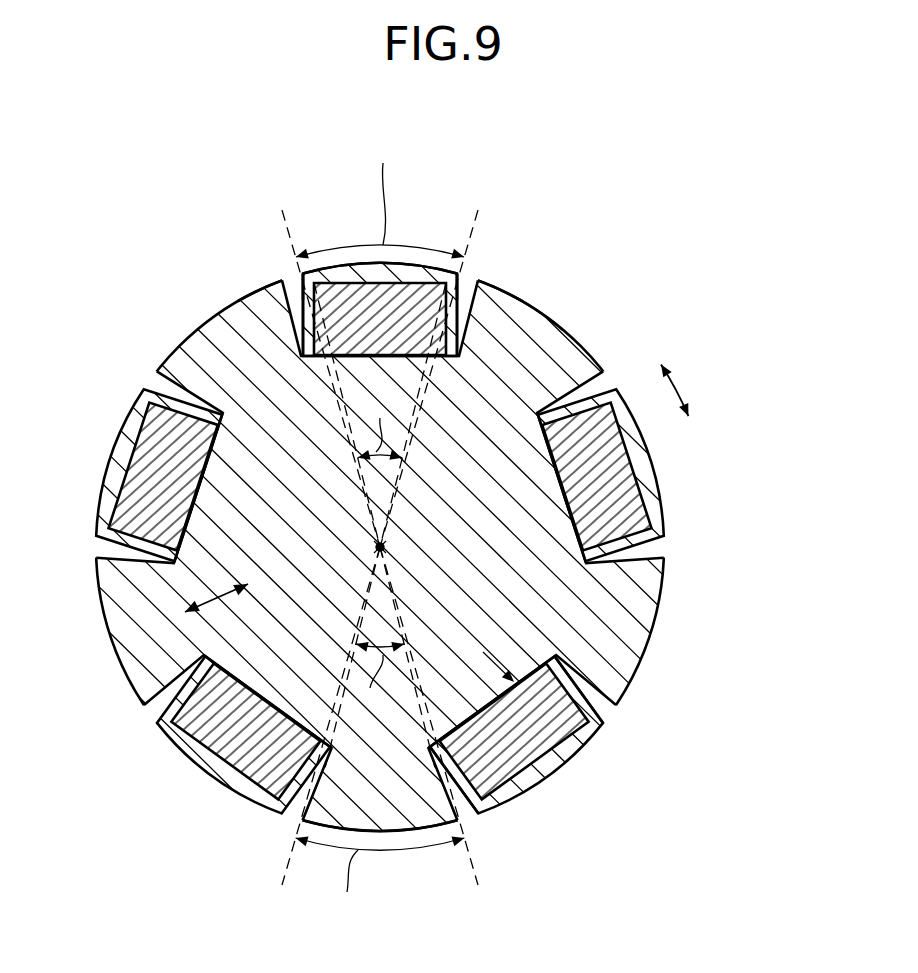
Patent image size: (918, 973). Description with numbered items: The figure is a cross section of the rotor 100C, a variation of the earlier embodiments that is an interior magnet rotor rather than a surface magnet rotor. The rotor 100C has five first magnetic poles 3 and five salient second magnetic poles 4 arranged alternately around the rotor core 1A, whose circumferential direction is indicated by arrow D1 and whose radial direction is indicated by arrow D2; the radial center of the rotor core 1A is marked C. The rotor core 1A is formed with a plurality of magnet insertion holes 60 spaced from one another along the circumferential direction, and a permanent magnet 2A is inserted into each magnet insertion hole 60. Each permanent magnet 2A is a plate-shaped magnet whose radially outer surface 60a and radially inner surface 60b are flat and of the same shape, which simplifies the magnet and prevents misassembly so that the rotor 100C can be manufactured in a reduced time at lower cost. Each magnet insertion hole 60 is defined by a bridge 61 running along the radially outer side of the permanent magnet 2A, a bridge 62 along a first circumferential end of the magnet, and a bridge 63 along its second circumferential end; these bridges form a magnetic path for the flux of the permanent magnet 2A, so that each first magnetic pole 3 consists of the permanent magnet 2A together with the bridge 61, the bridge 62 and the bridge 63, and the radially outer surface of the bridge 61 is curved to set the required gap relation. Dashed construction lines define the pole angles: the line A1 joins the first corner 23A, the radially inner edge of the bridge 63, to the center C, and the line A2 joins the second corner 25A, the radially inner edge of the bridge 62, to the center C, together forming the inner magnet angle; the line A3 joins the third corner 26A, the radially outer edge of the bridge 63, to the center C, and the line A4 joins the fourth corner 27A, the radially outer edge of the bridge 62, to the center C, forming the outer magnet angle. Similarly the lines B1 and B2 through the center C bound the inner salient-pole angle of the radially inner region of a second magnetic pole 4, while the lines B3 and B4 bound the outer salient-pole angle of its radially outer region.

The rotor 100C is at (737, 125).
The rotor core 1A is at (510, 595).
The permanent magnet 2A is at (548, 745).
The first magnetic pole 3 is at (420, 233).
The second magnetic pole 4 is at (575, 314).
The first corner 23A is at (285, 366).
The second corner 25A is at (463, 357).
The third corner 26A is at (313, 274).
The fourth corner 27A is at (448, 272).
The magnet insertion hole 60 is at (455, 730).
The radially outer surface 60a is at (523, 780).
The radially inner surface 60b is at (514, 680).
The bridge 61 is at (372, 278).
The bridge 62 is at (455, 312).
The bridge 63 is at (304, 325).
The line A1 is at (337, 440).
The line A2 is at (427, 440).
The line A3 is at (360, 489).
The line A4 is at (400, 489).
The line B1 is at (420, 678).
The line B2 is at (343, 678).
The line B3 is at (402, 598).
The line B4 is at (358, 600).
The center C is at (377, 547).
The arrow indicating circumferential direction D1 is at (688, 391).
The arrow indicating radial direction D2 is at (216, 589).